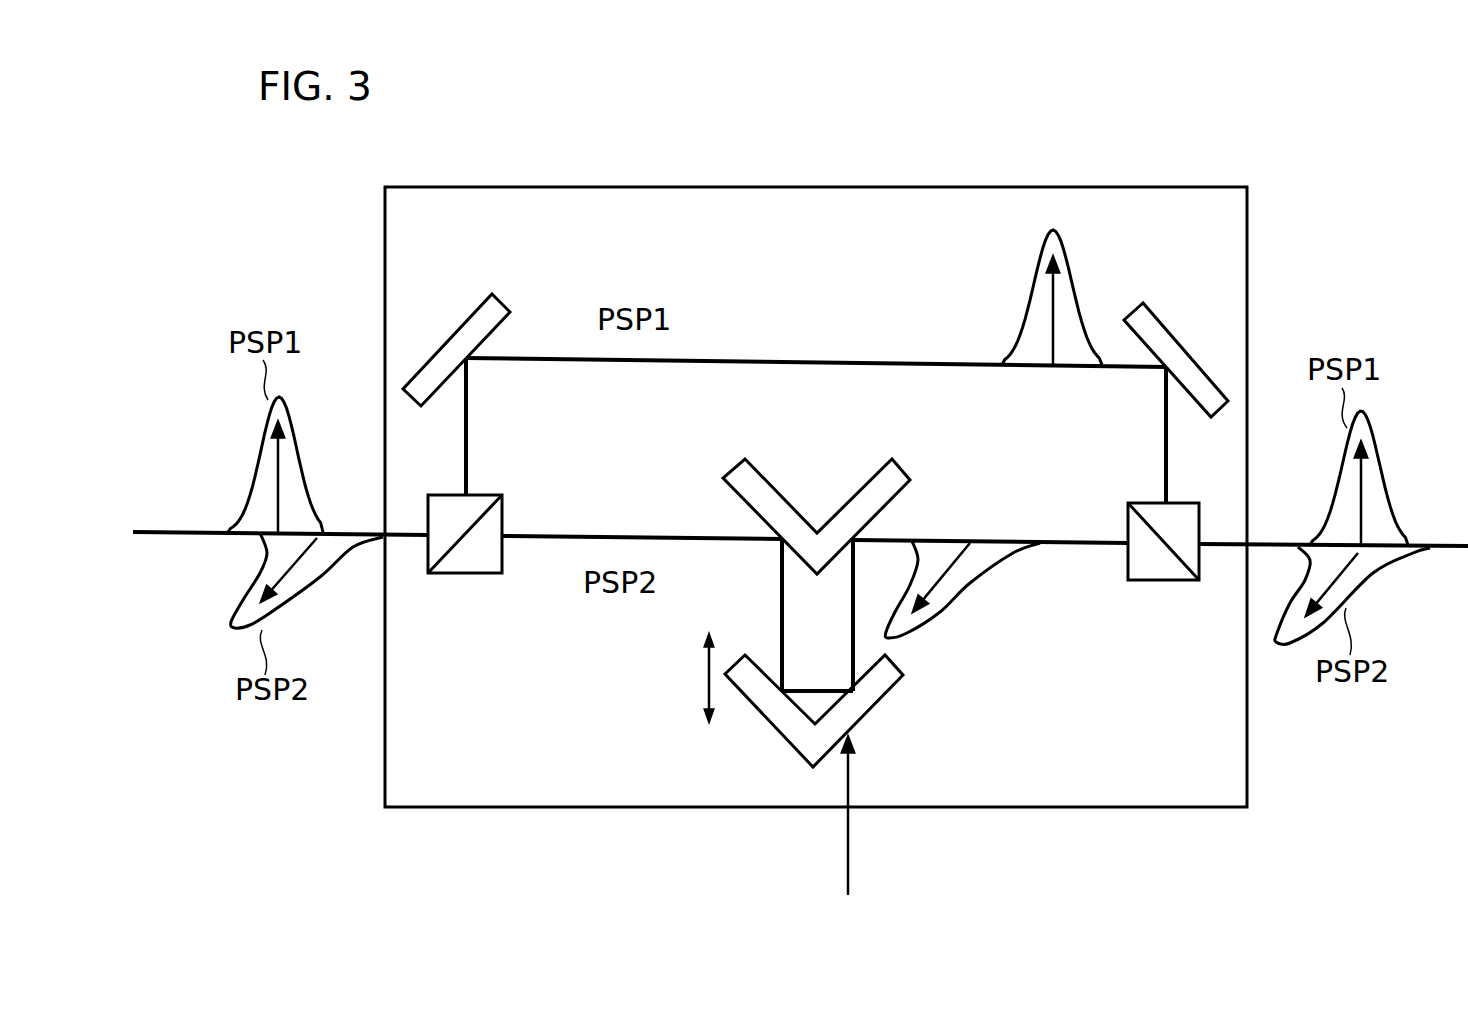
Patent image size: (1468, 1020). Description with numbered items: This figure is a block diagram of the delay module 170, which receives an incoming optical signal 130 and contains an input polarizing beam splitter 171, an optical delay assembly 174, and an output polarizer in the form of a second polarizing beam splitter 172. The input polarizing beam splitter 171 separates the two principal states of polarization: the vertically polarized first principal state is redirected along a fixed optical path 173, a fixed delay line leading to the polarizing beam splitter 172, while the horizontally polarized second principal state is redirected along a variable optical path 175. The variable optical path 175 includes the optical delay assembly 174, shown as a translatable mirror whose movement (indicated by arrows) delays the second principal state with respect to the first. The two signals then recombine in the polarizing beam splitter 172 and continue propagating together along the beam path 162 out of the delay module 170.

The input optical signal 130 is at (848, 835).
The beam path 162 is at (197, 532).
The delay module 170 is at (551, 187).
The input polarizing beam splitter 171 is at (460, 573).
The output polarizer 172 is at (1152, 580).
The fixed optical path 173 is at (815, 362).
The optical delay assembly 174 is at (880, 700).
The variable optical path 175 is at (1018, 540).